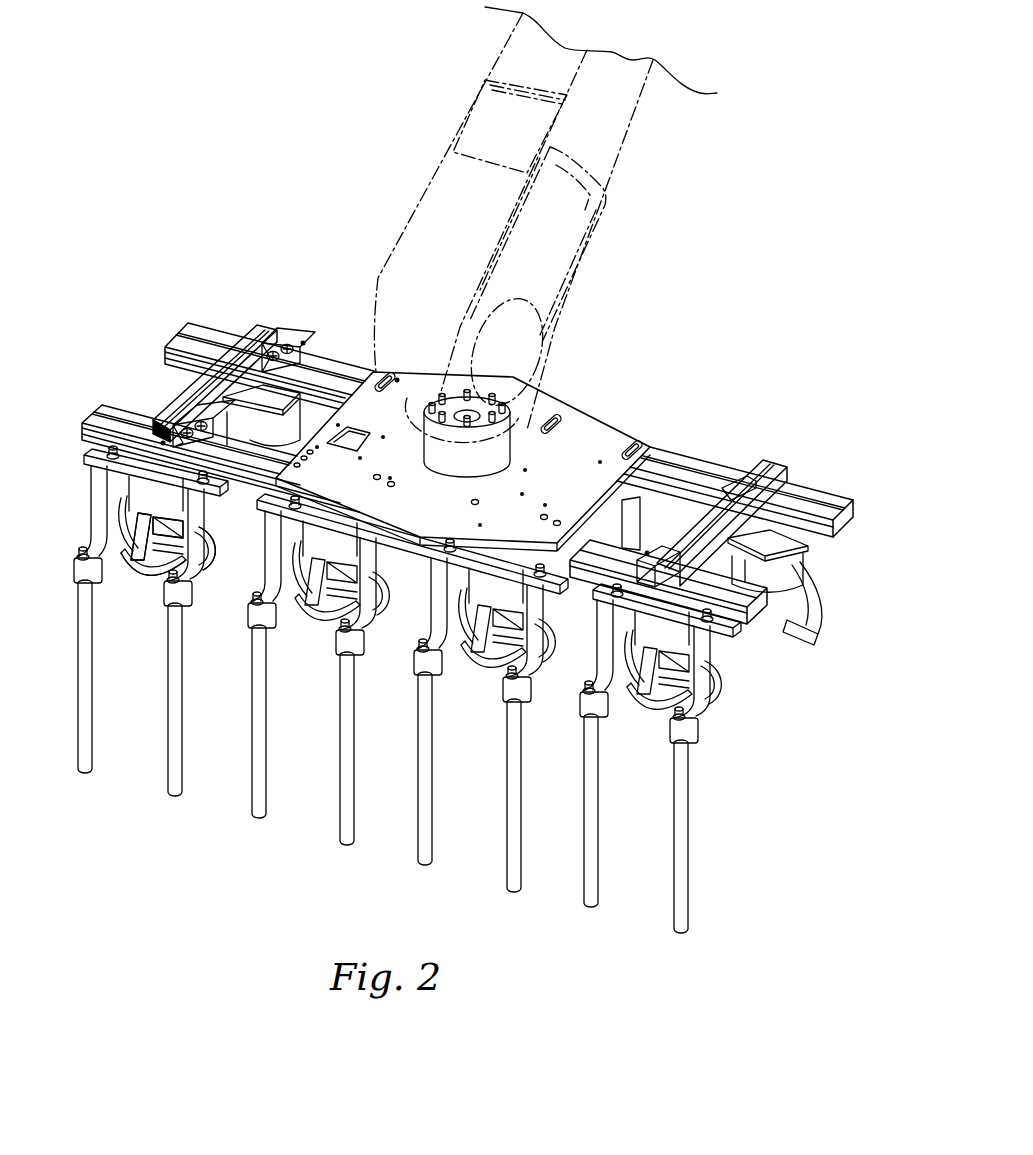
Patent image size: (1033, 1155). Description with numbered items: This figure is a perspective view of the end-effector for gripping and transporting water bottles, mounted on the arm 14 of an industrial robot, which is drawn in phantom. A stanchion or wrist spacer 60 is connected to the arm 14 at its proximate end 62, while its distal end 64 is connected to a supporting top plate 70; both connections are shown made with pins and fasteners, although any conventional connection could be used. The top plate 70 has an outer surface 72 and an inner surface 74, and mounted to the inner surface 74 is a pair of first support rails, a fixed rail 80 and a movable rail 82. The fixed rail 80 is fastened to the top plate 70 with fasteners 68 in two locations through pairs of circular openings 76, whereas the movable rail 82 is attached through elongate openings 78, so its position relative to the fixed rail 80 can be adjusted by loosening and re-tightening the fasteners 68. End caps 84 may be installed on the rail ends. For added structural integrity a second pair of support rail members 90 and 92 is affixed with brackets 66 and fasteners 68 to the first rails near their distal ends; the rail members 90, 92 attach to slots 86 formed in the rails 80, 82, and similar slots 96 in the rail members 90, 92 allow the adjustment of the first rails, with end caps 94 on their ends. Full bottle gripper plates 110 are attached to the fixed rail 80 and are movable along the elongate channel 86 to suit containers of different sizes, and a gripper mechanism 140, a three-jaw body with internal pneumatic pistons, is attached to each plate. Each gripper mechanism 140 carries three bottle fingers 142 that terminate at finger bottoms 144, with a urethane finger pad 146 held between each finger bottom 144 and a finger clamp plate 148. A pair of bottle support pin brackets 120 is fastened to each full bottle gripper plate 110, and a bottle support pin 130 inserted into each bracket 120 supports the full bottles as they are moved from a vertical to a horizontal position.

The arm 14 is at (417, 200).
The wrist spacer 60 is at (587, 430).
The proximate end 62 is at (427, 413).
The distal end 64 is at (440, 453).
The brackets 66 is at (290, 333).
The fasteners 68 is at (303, 343).
The supporting top plate 70 is at (562, 393).
The outer surface 72 is at (471, 501).
The inner surface 74 is at (643, 513).
The circular openings 76 is at (377, 477).
The elongate openings 78 is at (380, 370).
The fixed rail 80 is at (813, 633).
The movable rail 82 is at (700, 480).
The end caps 84 is at (853, 513).
The slots 86 is at (217, 323).
The support rail member 90 is at (162, 403).
The support rail member 92 is at (777, 507).
The end caps 94 is at (127, 473).
The slots 96 is at (172, 405).
The full bottle gripper plates 110 is at (270, 503).
The bottle support pin brackets 120 is at (393, 620).
The bottle support pins 130 is at (340, 817).
The gripper mechanisms 140 is at (313, 403).
The bottle fingers 142 is at (147, 547).
The finger bottoms 144 is at (160, 580).
The finger pads 146 is at (170, 550).
The finger clamp plates 148 is at (230, 573).